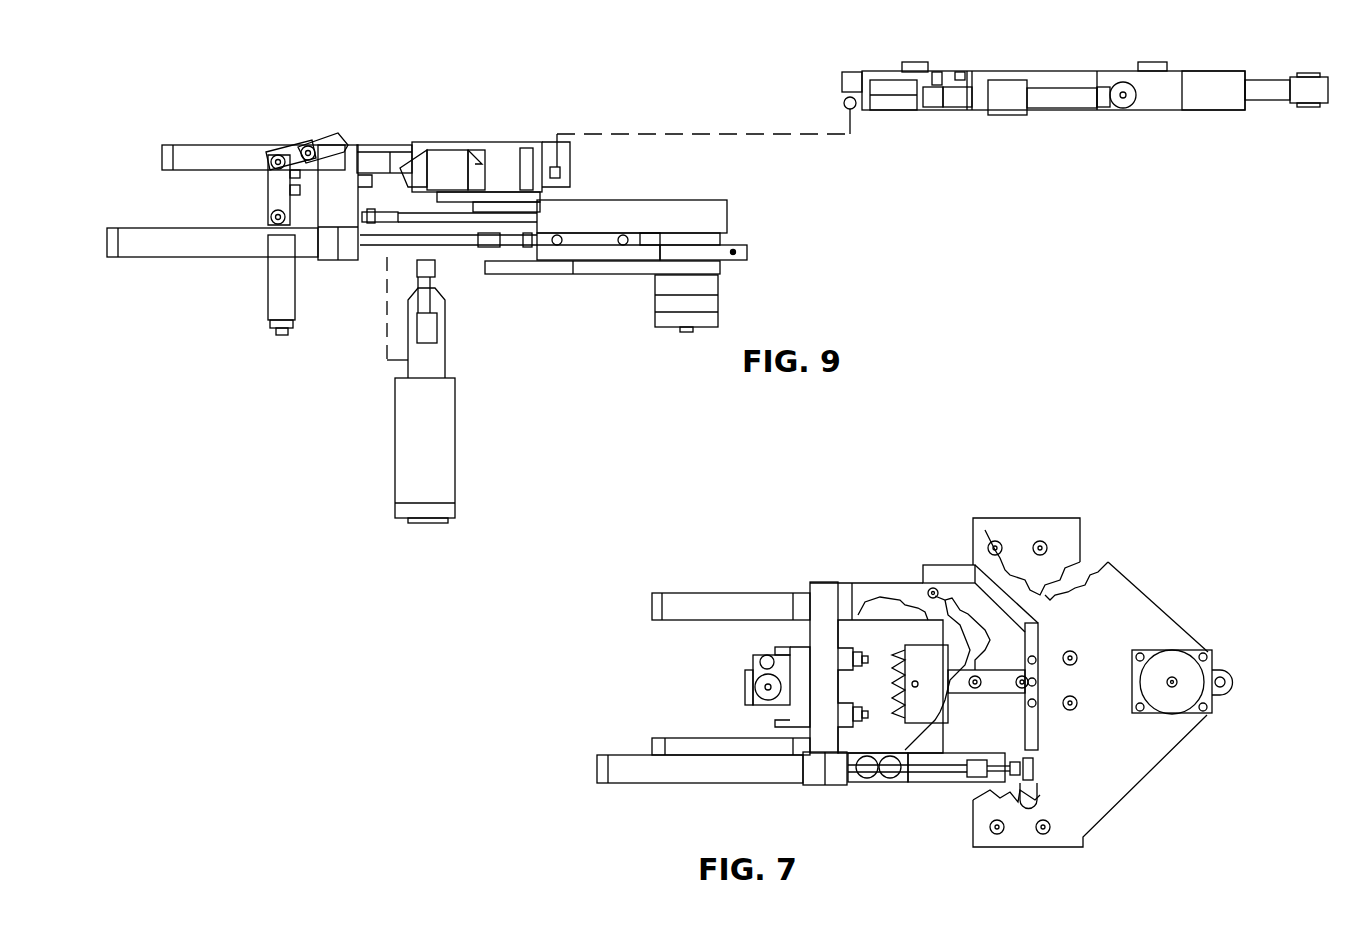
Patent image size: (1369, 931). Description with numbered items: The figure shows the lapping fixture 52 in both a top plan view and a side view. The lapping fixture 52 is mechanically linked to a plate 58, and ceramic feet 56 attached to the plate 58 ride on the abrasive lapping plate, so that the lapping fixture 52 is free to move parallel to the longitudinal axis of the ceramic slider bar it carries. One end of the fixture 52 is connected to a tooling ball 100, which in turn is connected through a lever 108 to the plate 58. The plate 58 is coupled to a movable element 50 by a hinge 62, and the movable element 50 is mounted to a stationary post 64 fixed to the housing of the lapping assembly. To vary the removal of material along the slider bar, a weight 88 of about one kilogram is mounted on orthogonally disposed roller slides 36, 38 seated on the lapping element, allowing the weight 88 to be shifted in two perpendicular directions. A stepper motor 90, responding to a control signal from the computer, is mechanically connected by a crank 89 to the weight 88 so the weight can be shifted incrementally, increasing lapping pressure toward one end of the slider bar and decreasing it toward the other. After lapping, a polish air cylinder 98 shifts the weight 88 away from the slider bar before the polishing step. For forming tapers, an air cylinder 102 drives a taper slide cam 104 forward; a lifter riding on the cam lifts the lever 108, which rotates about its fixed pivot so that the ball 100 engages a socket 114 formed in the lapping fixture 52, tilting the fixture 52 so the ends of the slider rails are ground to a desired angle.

In FIG. 9, the roller slide 36 is at (570, 256).
In FIG. 9, the roller slide 38 is at (672, 212).
In FIG. 9, the movable element 50 is at (1213, 78).
In FIG. 9, the lapping fixture 52 is at (482, 128).
In FIG. 9, the ceramic feet 56 is at (916, 65).
In FIG. 9, the plate 58 is at (1068, 80).
In FIG. 9, the hinge 62 is at (1128, 100).
In FIG. 9, the stationary post 64 is at (1313, 75).
In FIG. 7, the weight 88 is at (1080, 518).
In FIG. 9, the crank 89 is at (746, 250).
In FIG. 7, the crank 89 is at (1228, 678).
In FIG. 9, the stepper motor 90 is at (665, 330).
In FIG. 7, the stepper motor 90 is at (1178, 650).
In FIG. 9, the polish air cylinder 98 is at (205, 253).
In FIG. 7, the polish air cylinder 98 is at (677, 777).
In FIG. 9, the tooling ball 100 is at (856, 108).
In FIG. 9, the air cylinder 102 is at (1062, 100).
In FIG. 9, the taper slide cam 104 is at (890, 80).
In FIG. 9, the lever 108 is at (843, 89).
In FIG. 9, the socket 114 is at (560, 172).